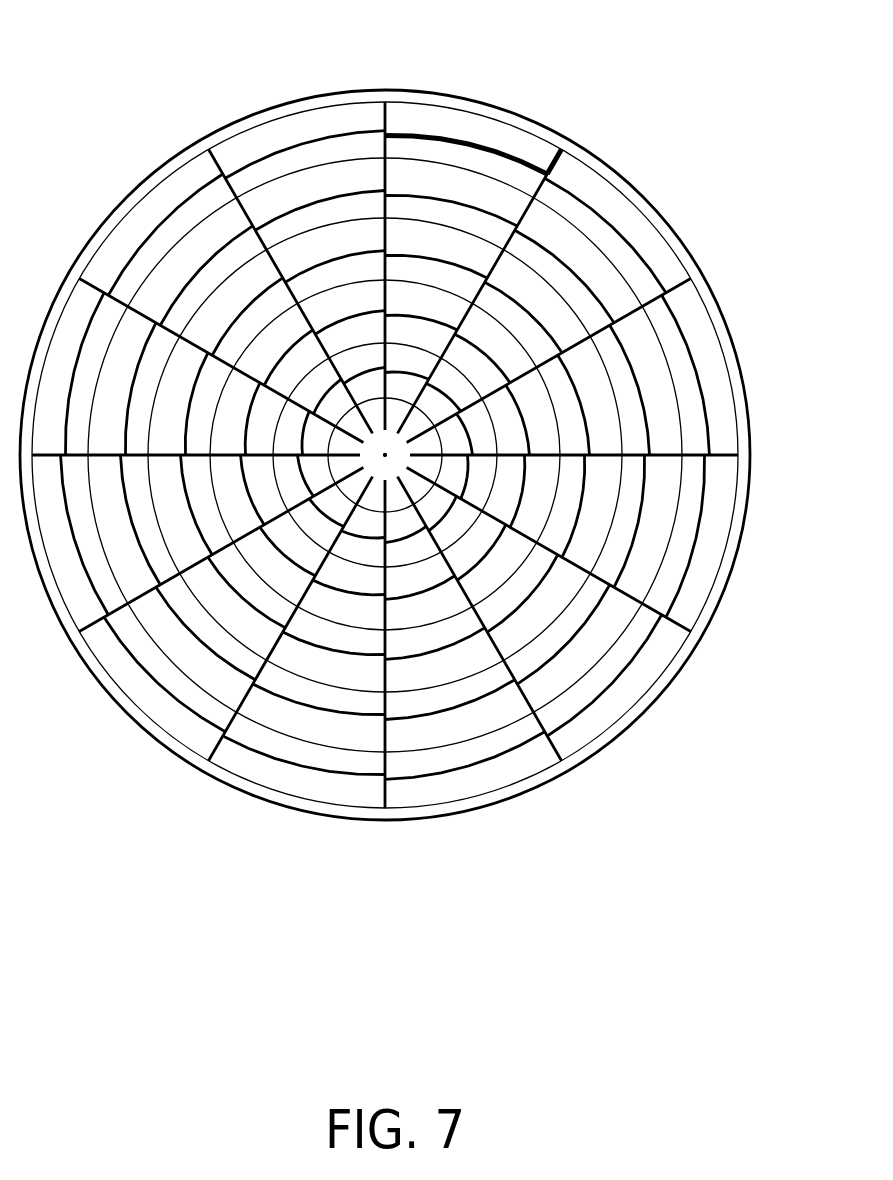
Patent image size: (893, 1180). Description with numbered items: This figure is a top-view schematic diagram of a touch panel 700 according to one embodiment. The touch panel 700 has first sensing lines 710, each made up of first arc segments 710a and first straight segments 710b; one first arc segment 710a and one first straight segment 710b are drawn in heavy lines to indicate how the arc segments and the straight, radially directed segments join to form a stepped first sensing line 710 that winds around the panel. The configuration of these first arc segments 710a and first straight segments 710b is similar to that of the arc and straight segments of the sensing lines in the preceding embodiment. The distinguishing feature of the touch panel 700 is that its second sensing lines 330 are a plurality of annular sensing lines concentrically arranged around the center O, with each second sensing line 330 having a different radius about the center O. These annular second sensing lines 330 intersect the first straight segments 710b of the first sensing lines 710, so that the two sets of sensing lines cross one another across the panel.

The touch panel 700 is at (790, 847).
The second sensing lines 330 is at (676, 246).
The first sensing lines 710 is at (660, 78).
The first arc segments 710a is at (490, 141).
The first straight segments 710b is at (578, 168).
The center O is at (388, 456).